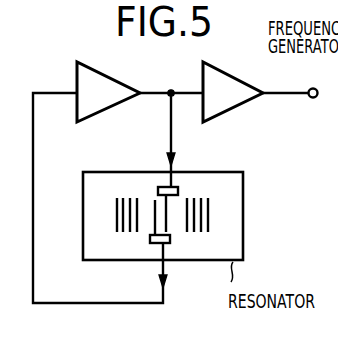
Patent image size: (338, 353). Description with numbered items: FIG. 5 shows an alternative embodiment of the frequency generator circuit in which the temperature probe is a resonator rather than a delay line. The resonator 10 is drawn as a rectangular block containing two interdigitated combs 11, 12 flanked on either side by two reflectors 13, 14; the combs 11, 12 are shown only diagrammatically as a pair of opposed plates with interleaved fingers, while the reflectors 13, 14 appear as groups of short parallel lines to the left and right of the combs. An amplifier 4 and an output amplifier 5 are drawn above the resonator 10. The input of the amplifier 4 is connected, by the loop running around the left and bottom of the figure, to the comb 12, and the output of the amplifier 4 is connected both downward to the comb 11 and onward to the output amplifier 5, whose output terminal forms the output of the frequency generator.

The amplifier 4 is at (102, 95).
The output amplifier 5 is at (228, 95).
The resonator 10 is at (243, 183).
The interdigitated comb 11 is at (179, 186).
The interdigitated comb 12 is at (170, 238).
The reflector 13 is at (113, 212).
The reflector 14 is at (208, 213).